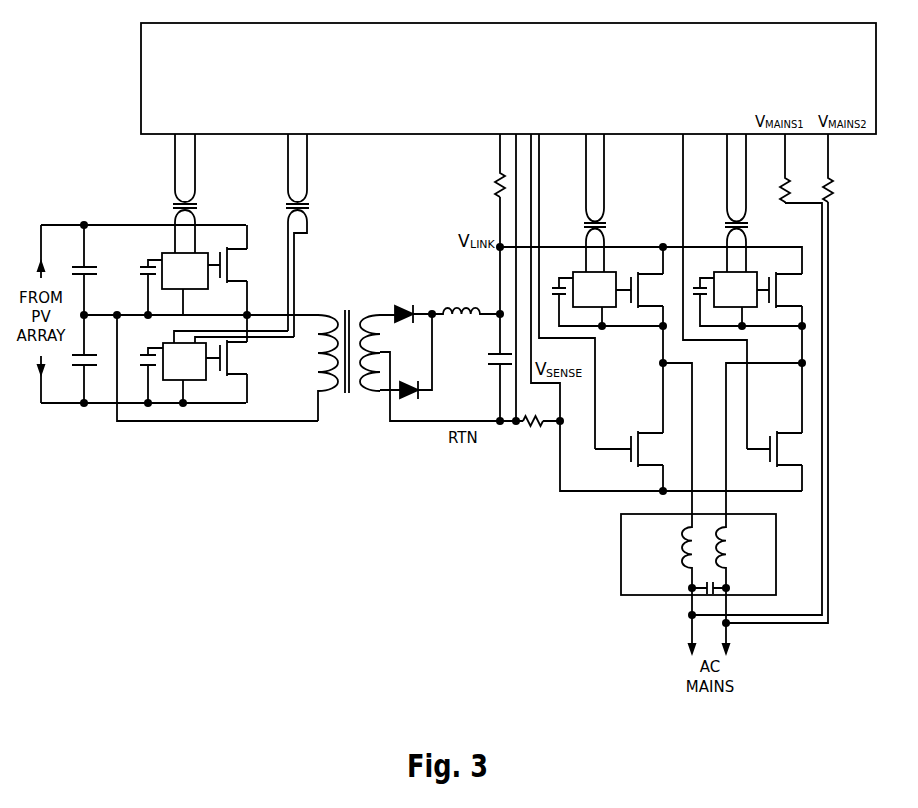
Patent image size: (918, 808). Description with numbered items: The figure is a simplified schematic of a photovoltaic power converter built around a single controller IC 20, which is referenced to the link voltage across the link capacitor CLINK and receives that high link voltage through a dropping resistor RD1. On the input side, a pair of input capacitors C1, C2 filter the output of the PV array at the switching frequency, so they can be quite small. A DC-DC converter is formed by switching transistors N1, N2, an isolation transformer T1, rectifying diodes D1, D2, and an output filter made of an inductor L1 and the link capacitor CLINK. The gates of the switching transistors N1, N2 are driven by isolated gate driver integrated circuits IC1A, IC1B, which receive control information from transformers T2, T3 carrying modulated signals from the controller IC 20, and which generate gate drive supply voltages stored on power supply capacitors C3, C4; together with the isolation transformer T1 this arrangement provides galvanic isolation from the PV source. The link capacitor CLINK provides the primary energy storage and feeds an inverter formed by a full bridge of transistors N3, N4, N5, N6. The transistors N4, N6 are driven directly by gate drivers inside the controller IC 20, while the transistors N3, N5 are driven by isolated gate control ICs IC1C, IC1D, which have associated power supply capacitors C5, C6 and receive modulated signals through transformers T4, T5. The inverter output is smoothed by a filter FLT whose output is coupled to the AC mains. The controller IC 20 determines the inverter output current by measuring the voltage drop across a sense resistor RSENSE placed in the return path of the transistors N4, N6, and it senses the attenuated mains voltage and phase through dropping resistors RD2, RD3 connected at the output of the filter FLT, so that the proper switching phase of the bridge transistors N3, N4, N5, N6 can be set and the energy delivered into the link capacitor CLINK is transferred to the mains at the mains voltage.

The controller IC 20 is at (508, 78).
The input capacitor C1 is at (91, 270).
The input capacitor C2 is at (91, 359).
The power supply capacitor C3 is at (145, 283).
The power supply capacitor C4 is at (146, 372).
The power supply capacitor C5 is at (605, 292).
The power supply capacitor C6 is at (745, 292).
The isolated gate driver integrated circuit IC1A is at (185, 284).
The isolated gate driver integrated circuit IC1B is at (184, 373).
The isolated gate control IC IC1C is at (594, 299).
The isolated gate control IC IC1D is at (735, 299).
The switching transistor N1 is at (243, 265).
The switching transistor N2 is at (242, 358).
The transistor N3 is at (644, 290).
The transistor N4 is at (635, 449).
The transistor N5 is at (784, 290).
The transistor N6 is at (780, 449).
The transformer T1 is at (349, 349).
The transformer T2 is at (174, 193).
The transformer T3 is at (241, 238).
The transformer T4 is at (585, 203).
The transformer T5 is at (727, 203).
The diode D1 is at (413, 303).
The diode D2 is at (414, 356).
The inductor L1 is at (466, 299).
The dropping resistor RD1 is at (486, 165).
The dropping resistor RD2 is at (771, 168).
The dropping resistor RD3 is at (842, 168).
The link capacitor CLINK is at (485, 368).
The resistor RSENSE is at (536, 433).
The filter FLT is at (698, 554).